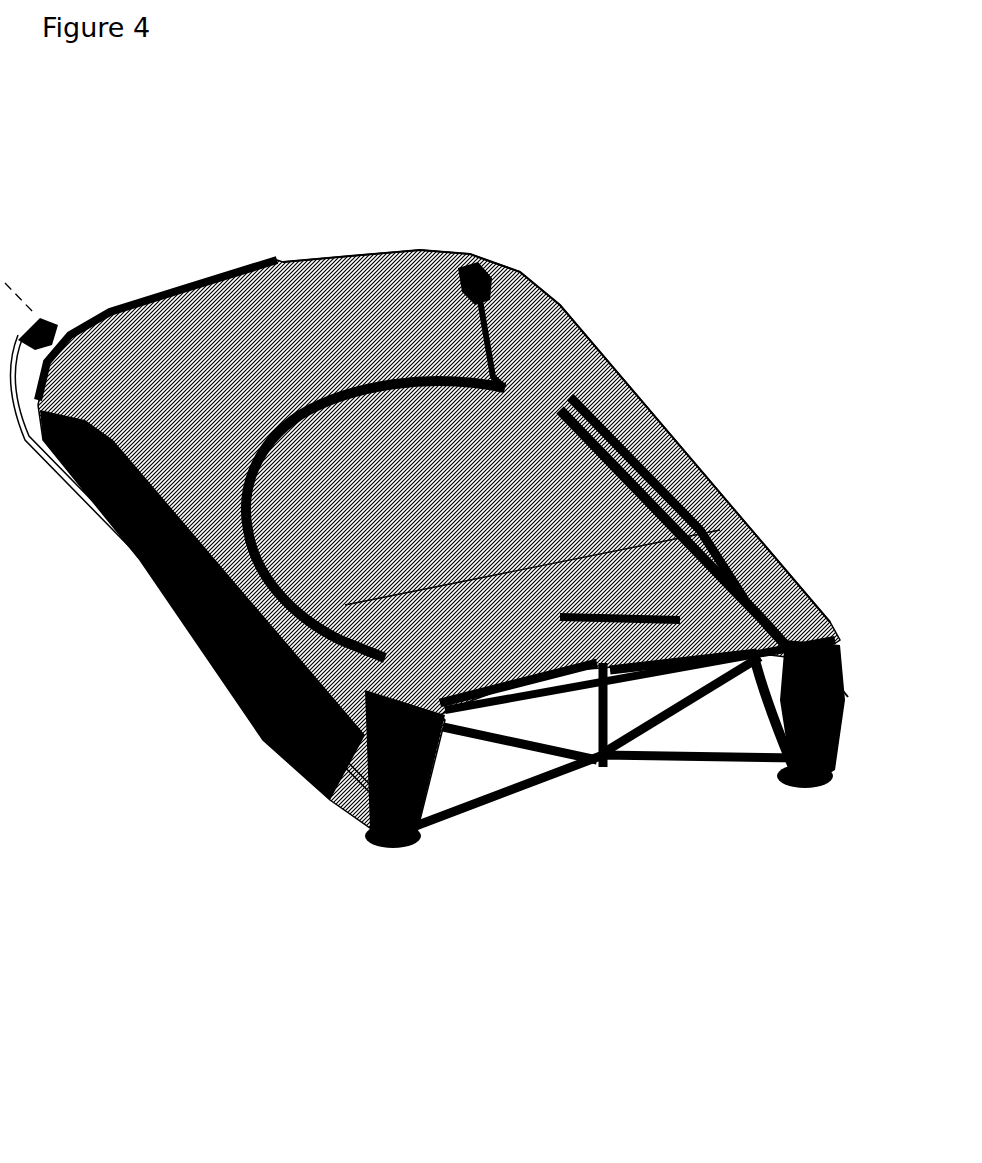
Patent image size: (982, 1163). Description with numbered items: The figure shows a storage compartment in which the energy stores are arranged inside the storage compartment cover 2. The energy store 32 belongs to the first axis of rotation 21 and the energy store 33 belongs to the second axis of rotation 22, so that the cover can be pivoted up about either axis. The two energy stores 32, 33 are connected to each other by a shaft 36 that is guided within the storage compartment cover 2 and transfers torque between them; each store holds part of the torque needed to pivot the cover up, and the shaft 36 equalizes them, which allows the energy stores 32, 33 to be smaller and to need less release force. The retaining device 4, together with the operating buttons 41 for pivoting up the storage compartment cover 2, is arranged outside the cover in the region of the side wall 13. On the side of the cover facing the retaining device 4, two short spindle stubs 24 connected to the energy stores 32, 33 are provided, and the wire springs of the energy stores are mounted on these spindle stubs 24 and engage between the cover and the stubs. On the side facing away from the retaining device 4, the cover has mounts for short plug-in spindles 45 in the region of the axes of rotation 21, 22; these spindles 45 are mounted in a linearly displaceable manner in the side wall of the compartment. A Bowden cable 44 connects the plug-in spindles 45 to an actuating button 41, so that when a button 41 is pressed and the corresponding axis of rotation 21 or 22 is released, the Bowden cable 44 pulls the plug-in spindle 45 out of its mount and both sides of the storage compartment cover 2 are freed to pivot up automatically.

The storage compartment cover 2 is at (375, 287).
The second axis of rotation 22 is at (440, 250).
The plug-in spindles 45 is at (490, 275).
The shaft 36 is at (320, 403).
The energy store 33 is at (735, 585).
The spindle stubs 24 is at (258, 668).
The operating buttons 41 is at (598, 620).
The energy store 32 is at (370, 622).
The first axis of rotation 21 is at (452, 753).
The retaining device 4 is at (365, 738).
The side wall 13 is at (358, 827).
The Bowden cable 44 is at (97, 517).